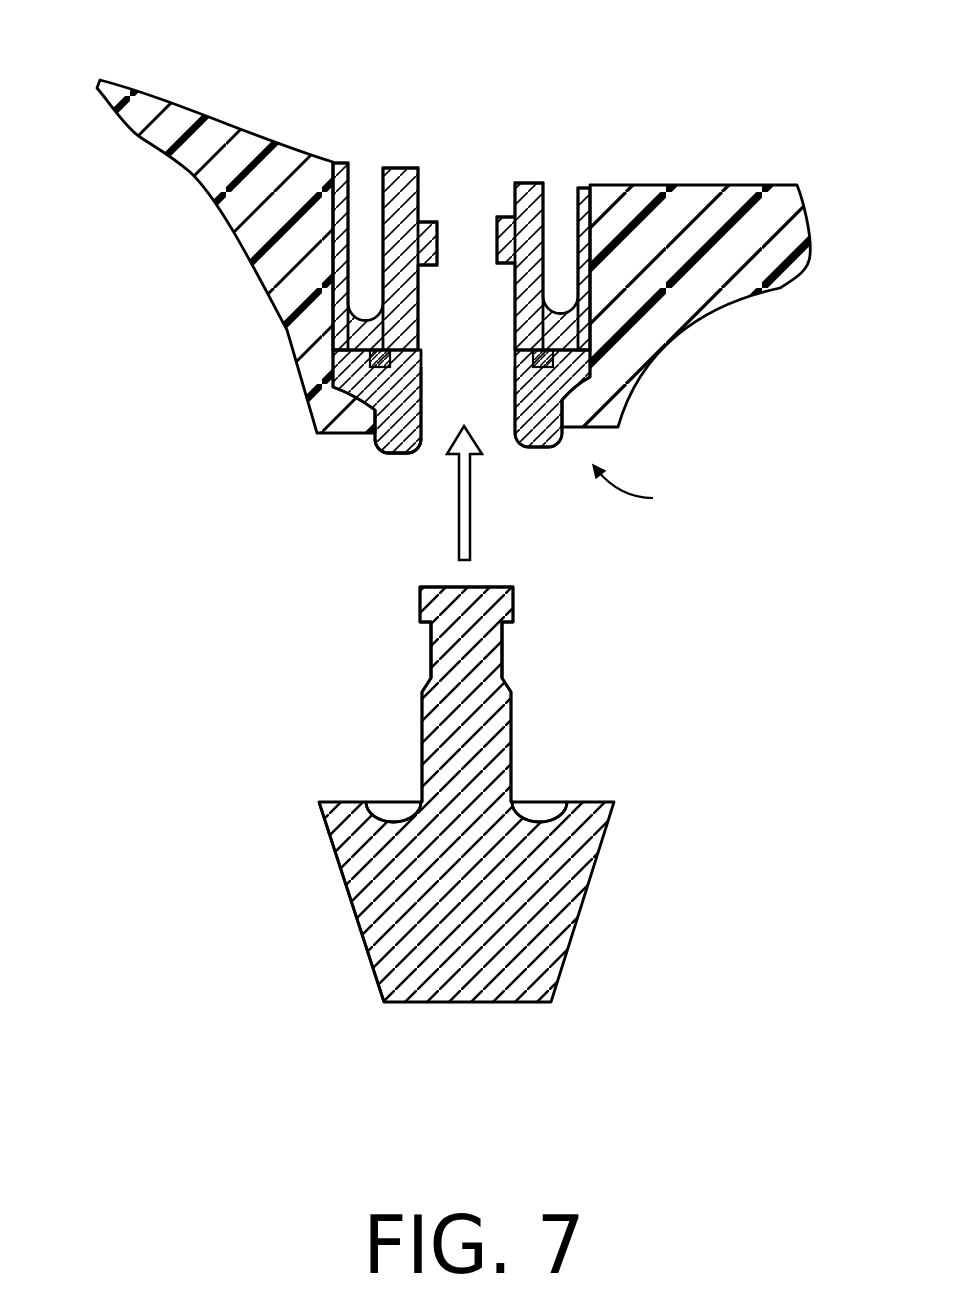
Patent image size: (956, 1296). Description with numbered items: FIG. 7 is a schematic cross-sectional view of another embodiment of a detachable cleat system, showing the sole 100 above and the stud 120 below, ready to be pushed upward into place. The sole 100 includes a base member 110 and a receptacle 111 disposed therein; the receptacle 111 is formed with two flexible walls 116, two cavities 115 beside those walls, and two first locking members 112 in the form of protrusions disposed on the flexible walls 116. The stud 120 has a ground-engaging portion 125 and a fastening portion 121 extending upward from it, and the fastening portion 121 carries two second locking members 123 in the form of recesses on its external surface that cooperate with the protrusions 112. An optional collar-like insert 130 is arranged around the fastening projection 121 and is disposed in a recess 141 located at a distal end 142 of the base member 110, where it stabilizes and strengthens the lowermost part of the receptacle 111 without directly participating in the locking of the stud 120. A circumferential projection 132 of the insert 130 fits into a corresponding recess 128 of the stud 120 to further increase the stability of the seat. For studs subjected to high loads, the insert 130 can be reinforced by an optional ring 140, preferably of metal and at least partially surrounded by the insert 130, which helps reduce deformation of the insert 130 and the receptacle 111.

The sole 100 is at (187, 110).
The base member 110 is at (665, 315).
The receptacle 111 is at (345, 325).
The first locking members 112 is at (497, 217).
The cavities 115 is at (360, 223).
The flexible walls 116 is at (397, 166).
The stud 120 is at (544, 919).
The fastening portion 121 is at (469, 727).
The second locking members 123 is at (432, 650).
The ground-engaging portion 125 is at (394, 936).
The recess 128 is at (394, 802).
The insert 130 is at (530, 450).
The circumferential projection 132 is at (390, 452).
The ring 140 is at (423, 387).
The recess 141 is at (370, 412).
The distal end 142 is at (663, 497).